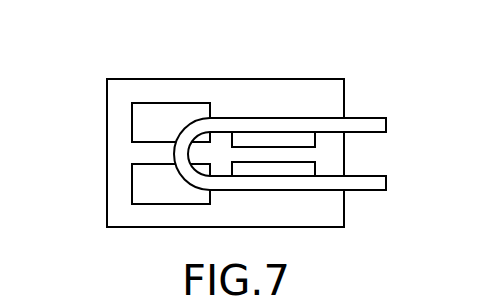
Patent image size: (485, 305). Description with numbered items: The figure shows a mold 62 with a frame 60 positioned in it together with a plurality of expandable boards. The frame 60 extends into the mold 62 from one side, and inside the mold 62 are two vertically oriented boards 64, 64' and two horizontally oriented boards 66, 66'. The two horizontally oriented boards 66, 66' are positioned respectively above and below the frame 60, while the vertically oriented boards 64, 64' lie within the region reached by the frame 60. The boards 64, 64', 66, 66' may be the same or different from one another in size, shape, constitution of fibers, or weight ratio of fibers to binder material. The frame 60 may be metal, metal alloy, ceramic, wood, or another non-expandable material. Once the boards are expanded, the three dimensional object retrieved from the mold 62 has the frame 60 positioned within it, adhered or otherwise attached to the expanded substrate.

The frame 60 is at (377, 118).
The mold 62 is at (283, 79).
The vertically oriented board 64 is at (316, 148).
The vertically oriented board 64' is at (343, 170).
The horizontally oriented board 66 is at (171, 90).
The horizontally oriented board 66' is at (126, 177).